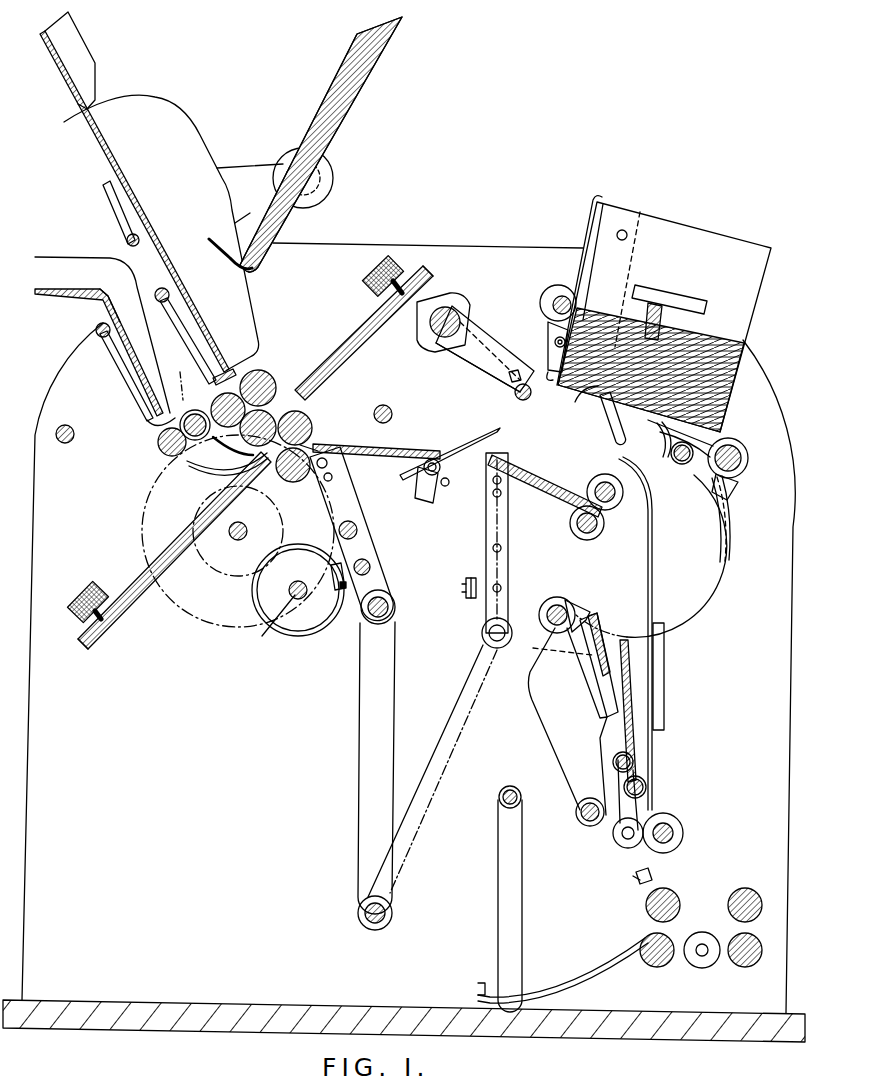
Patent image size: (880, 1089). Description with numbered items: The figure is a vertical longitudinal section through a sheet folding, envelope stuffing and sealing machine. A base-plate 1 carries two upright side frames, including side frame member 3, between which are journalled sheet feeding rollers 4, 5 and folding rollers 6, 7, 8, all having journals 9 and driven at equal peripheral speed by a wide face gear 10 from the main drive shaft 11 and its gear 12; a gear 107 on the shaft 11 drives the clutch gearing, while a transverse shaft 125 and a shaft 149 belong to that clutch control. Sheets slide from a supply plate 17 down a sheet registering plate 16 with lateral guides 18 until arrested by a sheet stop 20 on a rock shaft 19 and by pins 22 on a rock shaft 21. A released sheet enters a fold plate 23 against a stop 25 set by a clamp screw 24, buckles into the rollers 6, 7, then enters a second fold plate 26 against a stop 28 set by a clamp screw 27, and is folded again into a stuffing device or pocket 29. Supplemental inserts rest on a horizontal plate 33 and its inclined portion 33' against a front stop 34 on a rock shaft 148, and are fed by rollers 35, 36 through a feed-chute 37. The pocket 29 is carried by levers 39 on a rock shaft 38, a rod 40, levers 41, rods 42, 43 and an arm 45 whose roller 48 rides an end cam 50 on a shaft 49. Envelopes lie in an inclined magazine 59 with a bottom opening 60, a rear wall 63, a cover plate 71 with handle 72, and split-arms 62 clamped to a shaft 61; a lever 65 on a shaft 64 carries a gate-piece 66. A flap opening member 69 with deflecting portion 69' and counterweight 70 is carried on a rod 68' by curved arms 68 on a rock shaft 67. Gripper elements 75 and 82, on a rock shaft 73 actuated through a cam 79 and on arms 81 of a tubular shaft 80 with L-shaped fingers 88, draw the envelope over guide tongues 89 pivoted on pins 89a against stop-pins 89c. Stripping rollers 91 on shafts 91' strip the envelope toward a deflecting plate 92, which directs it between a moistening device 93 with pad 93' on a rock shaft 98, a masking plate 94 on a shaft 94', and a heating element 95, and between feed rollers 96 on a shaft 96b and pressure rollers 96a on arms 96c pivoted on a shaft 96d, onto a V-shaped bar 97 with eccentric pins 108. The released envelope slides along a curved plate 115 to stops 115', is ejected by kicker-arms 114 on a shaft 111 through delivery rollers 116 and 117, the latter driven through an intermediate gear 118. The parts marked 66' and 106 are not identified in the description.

The base-plate 1 is at (325, 1008).
The side frame member 3 is at (30, 742).
The sheet feeding roller 4 is at (212, 404).
The sheet feeding roller 5 is at (264, 372).
The sheet folding roller 6 is at (272, 400).
The sheet folding roller 7 is at (305, 418).
The sheet folding roller 8 is at (290, 478).
The journals 9 is at (312, 452).
The wide face gear 10 is at (180, 372).
The main drive shaft 11 is at (242, 526).
The gear 12 is at (172, 600).
The sheet registering plate 16 is at (88, 117).
The plate 17 is at (345, 118).
The adjustable lateral guides 18 is at (78, 42).
The transverse rock shaft 19 is at (170, 295).
The sheet gage or stop 20 is at (230, 368).
The transverse rock shaft 21 is at (127, 240).
The pins 22 is at (103, 186).
The fold plate 23 is at (375, 312).
The clamp screw 24 is at (375, 264).
The stop 25 is at (415, 287).
The second fold plate 26 is at (152, 573).
The clamp screw 27 is at (88, 600).
The stop 28 is at (103, 635).
The stuffing device or pocket 29 is at (400, 445).
The horizontal plate 33 is at (102, 336).
The inclined plate-portion 33' is at (86, 305).
The front stop or gage 34 is at (150, 414).
The feeding roller 35 is at (158, 446).
The feeding roller 36 is at (198, 455).
The feed-chute 37 is at (212, 475).
The transverse rock shaft 38 is at (362, 917).
The levers 39 is at (360, 725).
The transverse rod 40 is at (396, 605).
The levers 41 is at (500, 568).
The transverse parallel rod 42 is at (357, 530).
The transverse parallel rod 43 is at (370, 566).
The second arm 45 is at (350, 492).
The roller 48 is at (337, 582).
The transverse shaft 49 is at (281, 616).
The end cam 50 is at (315, 632).
The magazine or holder 59 is at (685, 238).
The opening 60 is at (592, 398).
The transverse shaft 61 is at (735, 452).
The split-arms 62 is at (737, 490).
The rear wall 63 is at (594, 203).
The short transverse shaft 64 is at (563, 295).
The lever 65 is at (553, 340).
The gate-piece 66 is at (546, 388).
The rod 66' is at (602, 418).
The transverse rock shaft 67 is at (560, 606).
The curved arms 68 is at (665, 556).
The transverse rod 68' is at (676, 465).
The envelope-flap opening member 69 is at (649, 440).
The flap-deflecting portion 69' is at (649, 442).
The counterweight 70 is at (729, 548).
The cover plate 71 is at (742, 335).
The handle 72 is at (682, 305).
The transverse rock shaft 73 is at (448, 312).
The gripper element 75 is at (520, 398).
The cam 79 is at (487, 362).
The tubular shaft 80 is at (430, 335).
The arms 81 is at (455, 337).
The gripper elements or pads 82 is at (511, 380).
The L-shaped fingers 88 is at (490, 330).
The guide tongues or blades 89 is at (478, 440).
The stub shafts or pins 89a is at (441, 467).
The stop-pins 89c is at (437, 498).
The stripping rollers 91 is at (609, 513).
The intergeared transverse shafts 91' is at (605, 503).
The deflecting plate 92 is at (652, 536).
The moistening device 93 is at (590, 665).
The felt pad or tape 93' is at (595, 611).
The flap-masking or protecting plate 94 is at (660, 711).
The transverse shaft 94' is at (658, 781).
The heating element 95 is at (664, 718).
The feed rollers 96 is at (684, 834).
The pressure rollers 96a is at (622, 845).
The transverse shaft 96b is at (679, 828).
The spring-pressed arms 96c is at (622, 812).
The transverse shaft 96d is at (618, 760).
The V-shaped bar 97 is at (652, 876).
The transverse rock shaft 98 is at (578, 816).
The ring 106 is at (257, 603).
The gear 107 is at (226, 572).
The pins 108 is at (633, 877).
The transverse shaft 111 is at (525, 783).
The kicker-arms 114 is at (500, 903).
The curved plate 115 is at (563, 970).
The stops 115' is at (466, 976).
The delivery rollers 116 is at (645, 938).
The delivery rollers 117 is at (735, 905).
The intermediate gear 118 is at (702, 968).
The transverse shaft 125 is at (383, 405).
The transverse rock shaft 148 is at (96, 330).
The transverse shaft 149 is at (68, 425).